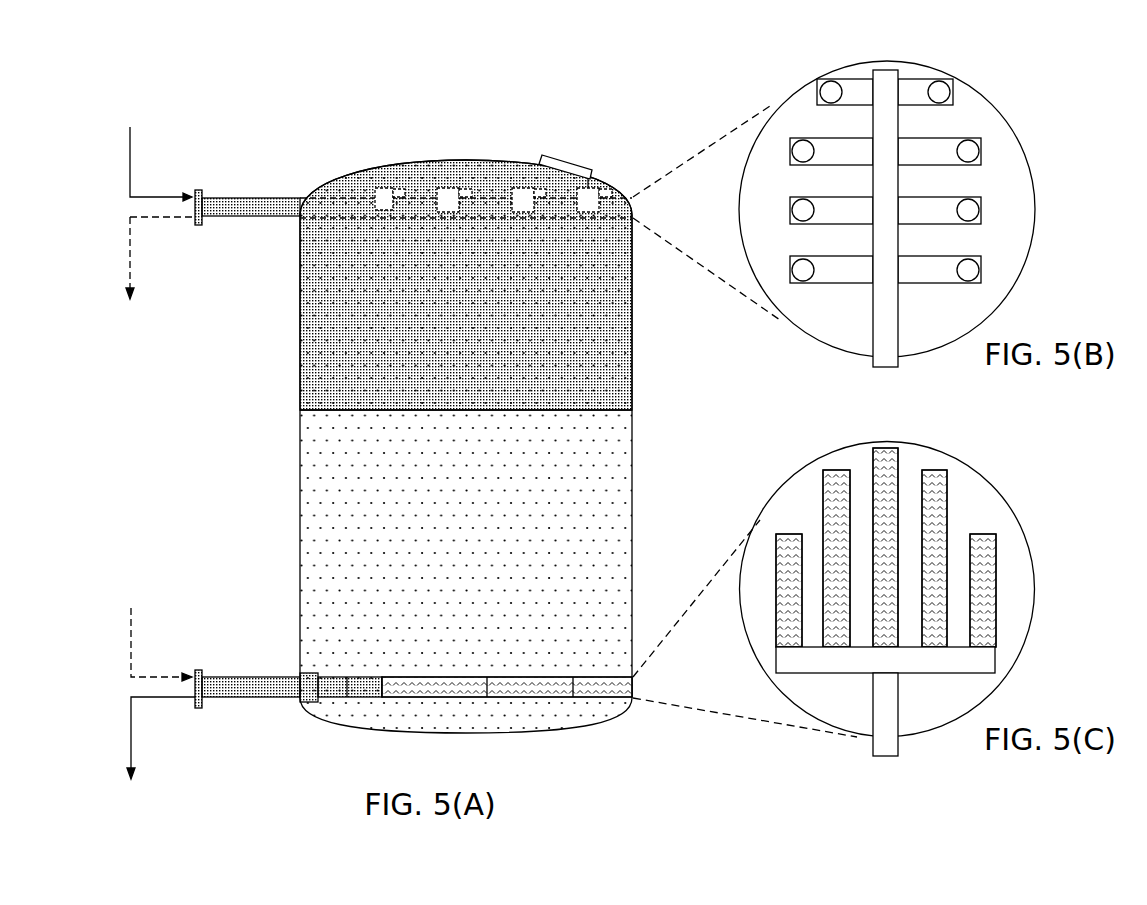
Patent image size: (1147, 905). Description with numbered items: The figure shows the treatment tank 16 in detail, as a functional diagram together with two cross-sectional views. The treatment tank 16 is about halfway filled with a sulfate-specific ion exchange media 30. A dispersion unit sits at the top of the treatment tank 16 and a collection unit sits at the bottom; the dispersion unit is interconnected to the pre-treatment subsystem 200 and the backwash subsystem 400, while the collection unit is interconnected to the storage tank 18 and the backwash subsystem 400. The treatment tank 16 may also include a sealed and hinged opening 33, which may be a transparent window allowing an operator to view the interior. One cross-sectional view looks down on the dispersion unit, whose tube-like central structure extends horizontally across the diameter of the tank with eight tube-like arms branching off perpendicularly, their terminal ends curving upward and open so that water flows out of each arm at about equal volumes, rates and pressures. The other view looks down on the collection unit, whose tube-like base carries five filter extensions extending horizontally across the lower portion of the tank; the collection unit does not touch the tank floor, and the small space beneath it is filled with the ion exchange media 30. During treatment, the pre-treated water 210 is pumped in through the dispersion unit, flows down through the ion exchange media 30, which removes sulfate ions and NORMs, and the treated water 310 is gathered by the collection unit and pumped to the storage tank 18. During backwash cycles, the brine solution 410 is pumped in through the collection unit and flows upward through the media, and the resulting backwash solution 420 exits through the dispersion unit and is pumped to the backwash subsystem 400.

The treatment tank 16 is at (332, 57).
The storage tank 18 is at (133, 809).
The sulfate-specific ion exchange media 30 is at (318, 470).
The sealed and hinged opening 33 is at (568, 156).
The pre-treatment subsystem 200 is at (133, 87).
The pre-treated water 210 is at (154, 196).
The treated water 310 is at (155, 698).
The backwash subsystem 400 is at (132, 455).
The brine solution 410 is at (153, 678).
The backwash solution 420 is at (155, 218).